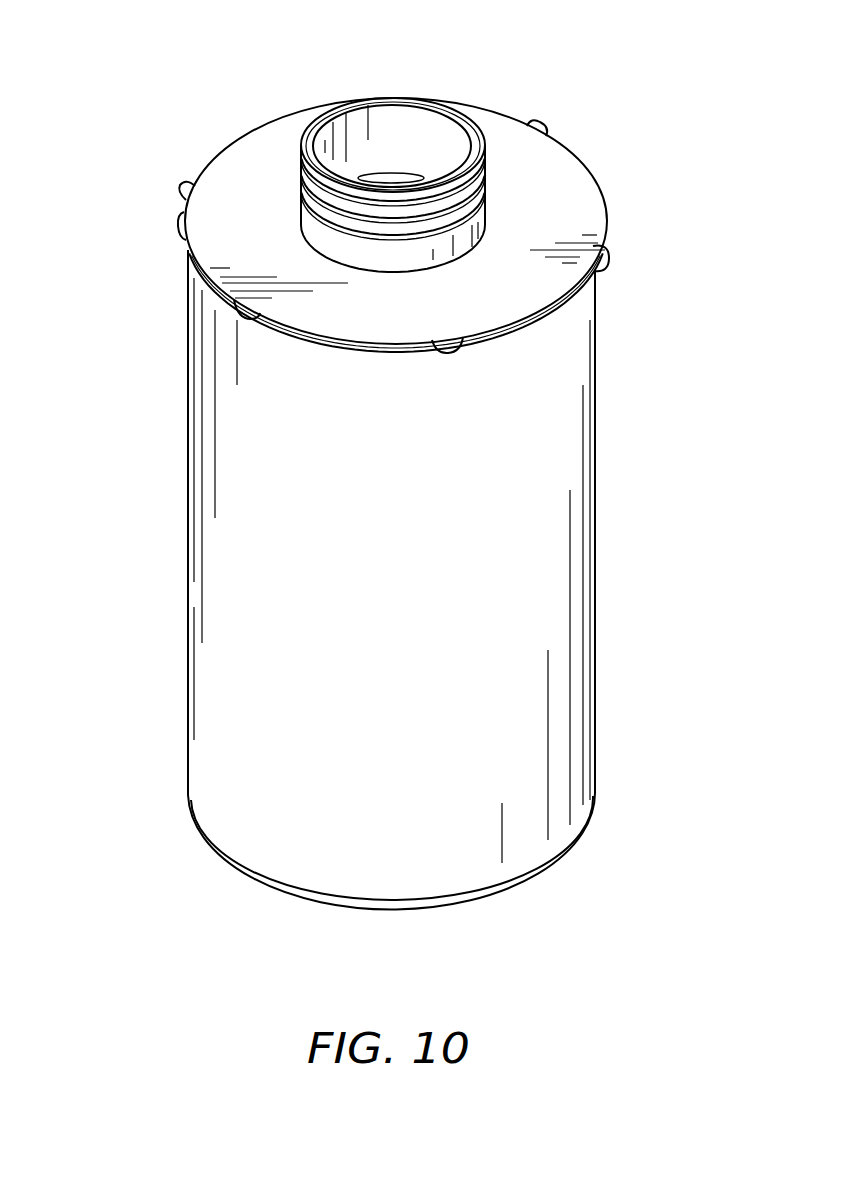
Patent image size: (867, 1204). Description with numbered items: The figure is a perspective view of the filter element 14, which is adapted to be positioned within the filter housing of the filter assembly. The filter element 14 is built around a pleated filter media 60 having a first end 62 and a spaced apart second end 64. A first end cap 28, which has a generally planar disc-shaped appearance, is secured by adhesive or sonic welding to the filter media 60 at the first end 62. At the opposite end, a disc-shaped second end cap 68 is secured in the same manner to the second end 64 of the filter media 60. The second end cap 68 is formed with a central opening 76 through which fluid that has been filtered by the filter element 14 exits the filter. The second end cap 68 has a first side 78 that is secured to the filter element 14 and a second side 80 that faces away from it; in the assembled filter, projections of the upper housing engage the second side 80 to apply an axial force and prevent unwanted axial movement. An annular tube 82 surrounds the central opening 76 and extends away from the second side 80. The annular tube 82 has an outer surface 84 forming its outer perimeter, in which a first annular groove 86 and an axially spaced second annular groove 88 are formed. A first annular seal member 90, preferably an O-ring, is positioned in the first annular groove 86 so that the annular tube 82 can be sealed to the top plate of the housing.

The filter element 14 is at (150, 440).
The first end cap 28 is at (525, 887).
The pleated filter media 60 is at (228, 575).
The first end 62 is at (293, 900).
The second end 64 is at (570, 342).
The second end cap 68 is at (567, 190).
The central opening 76 is at (393, 135).
The first side 78 is at (390, 353).
The second side 80 is at (212, 227).
The annular tube 82 is at (470, 138).
The outer surface 84 is at (410, 264).
The first annular groove 86 is at (303, 157).
The second annular groove 88 is at (318, 232).
The first annular seal member 90 is at (543, 137).